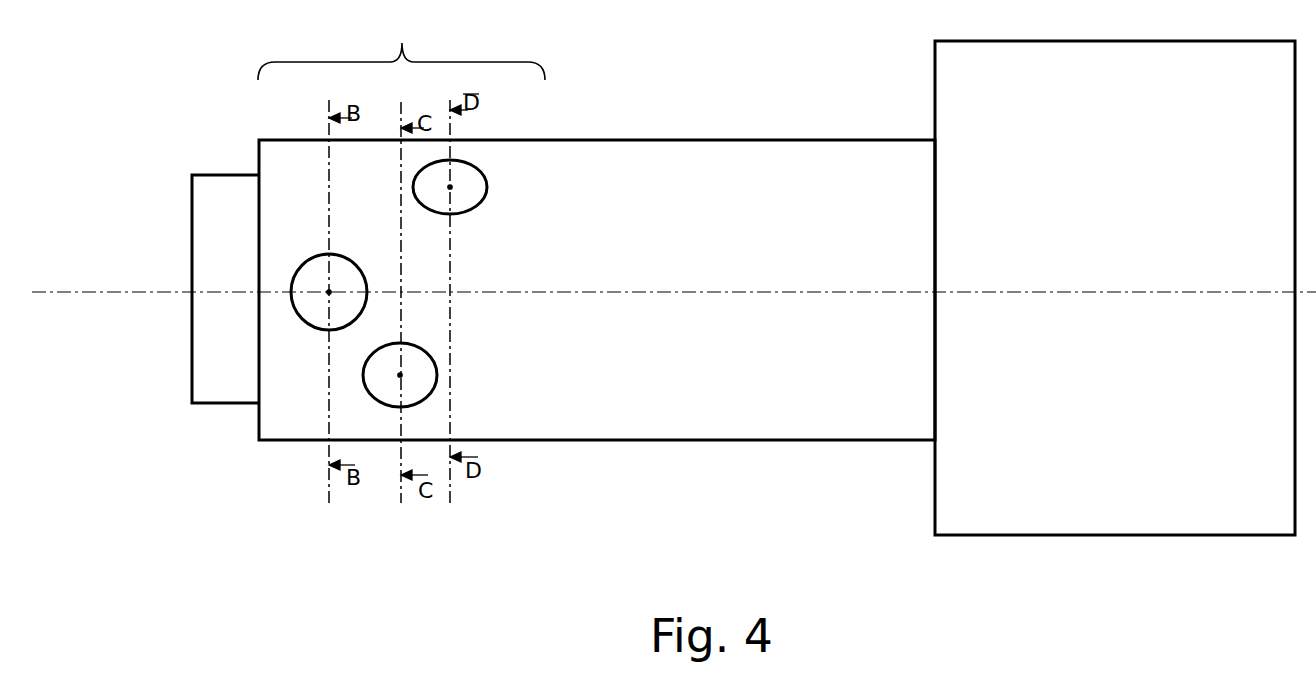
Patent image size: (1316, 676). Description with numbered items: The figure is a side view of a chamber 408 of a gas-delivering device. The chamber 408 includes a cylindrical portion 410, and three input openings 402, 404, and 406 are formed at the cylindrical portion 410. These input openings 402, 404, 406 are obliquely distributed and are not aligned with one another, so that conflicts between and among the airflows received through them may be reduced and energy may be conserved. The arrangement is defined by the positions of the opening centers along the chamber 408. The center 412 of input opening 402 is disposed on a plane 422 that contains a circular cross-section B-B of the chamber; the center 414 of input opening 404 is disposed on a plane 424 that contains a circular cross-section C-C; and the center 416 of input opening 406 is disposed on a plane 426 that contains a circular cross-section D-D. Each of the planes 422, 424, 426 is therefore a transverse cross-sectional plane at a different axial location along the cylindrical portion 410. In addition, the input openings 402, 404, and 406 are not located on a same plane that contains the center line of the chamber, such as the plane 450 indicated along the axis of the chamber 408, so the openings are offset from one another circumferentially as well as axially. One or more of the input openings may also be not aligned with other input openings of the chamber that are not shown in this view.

The input opening 402 is at (317, 320).
The input opening 404 is at (420, 383).
The input opening 406 is at (484, 185).
The chamber 408 is at (770, 477).
The cylindrical portion 410 is at (401, 48).
The center of input opening 412 is at (329, 292).
The center of input opening 414 is at (400, 375).
The center of input opening 416 is at (450, 187).
The plane 422 is at (329, 497).
The plane 424 is at (401, 492).
The plane 426 is at (450, 488).
The plane 450 is at (150, 290).